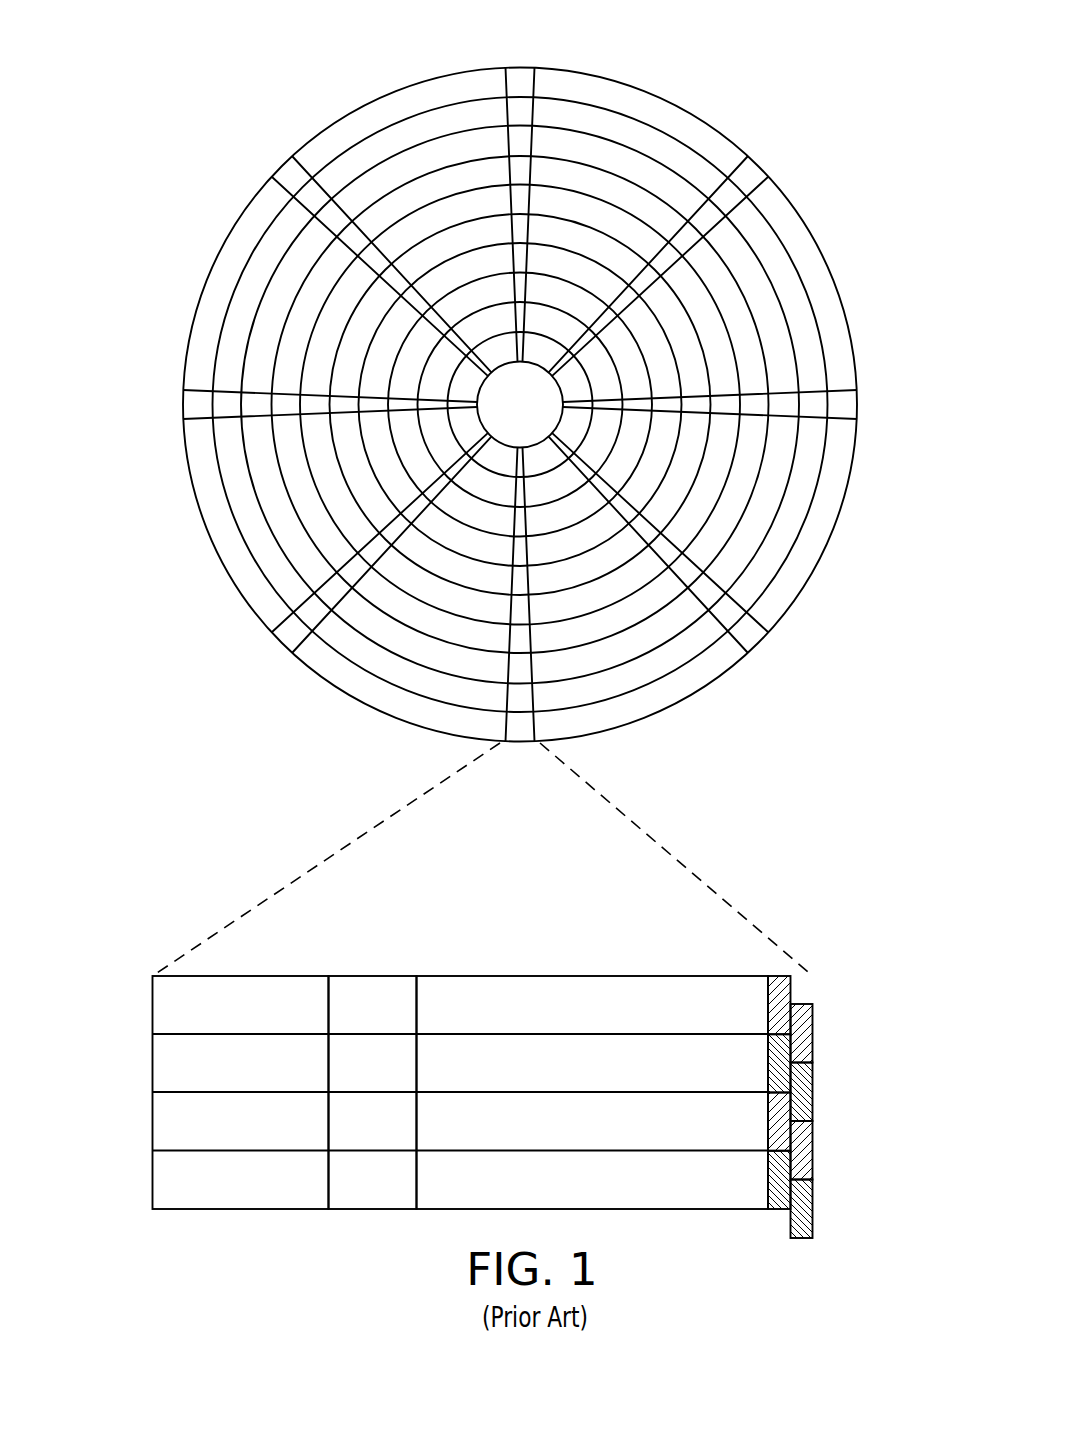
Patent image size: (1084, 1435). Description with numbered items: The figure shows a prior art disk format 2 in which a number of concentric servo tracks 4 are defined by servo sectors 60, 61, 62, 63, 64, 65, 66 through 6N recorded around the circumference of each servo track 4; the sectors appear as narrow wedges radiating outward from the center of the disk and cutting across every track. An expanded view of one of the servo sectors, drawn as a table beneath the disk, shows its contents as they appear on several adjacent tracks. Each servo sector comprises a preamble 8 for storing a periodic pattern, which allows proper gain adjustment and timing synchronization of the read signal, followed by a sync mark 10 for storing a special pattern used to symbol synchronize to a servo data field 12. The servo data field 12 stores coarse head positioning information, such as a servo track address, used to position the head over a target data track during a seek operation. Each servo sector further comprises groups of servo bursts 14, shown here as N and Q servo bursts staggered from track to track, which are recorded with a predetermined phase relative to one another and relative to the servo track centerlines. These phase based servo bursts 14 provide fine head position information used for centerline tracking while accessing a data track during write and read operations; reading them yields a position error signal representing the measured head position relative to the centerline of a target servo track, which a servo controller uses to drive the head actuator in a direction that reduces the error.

The disk format 2 is at (266, 68).
The servo track 4 is at (634, 134).
The servo sector 60 is at (520, 76).
The servo sector 61 is at (749, 172).
The servo sector 62 is at (848, 404).
The servo sector 63 is at (752, 640).
The servo sector 64 is at (366, 818).
The servo sector 65 is at (287, 638).
The servo sector 66 is at (190, 403).
The servo sector 6N is at (290, 172).
The preamble 8 is at (250, 975).
The sync mark 10 is at (375, 975).
The servo data field 12 is at (580, 975).
The servo bursts 14 is at (814, 970).